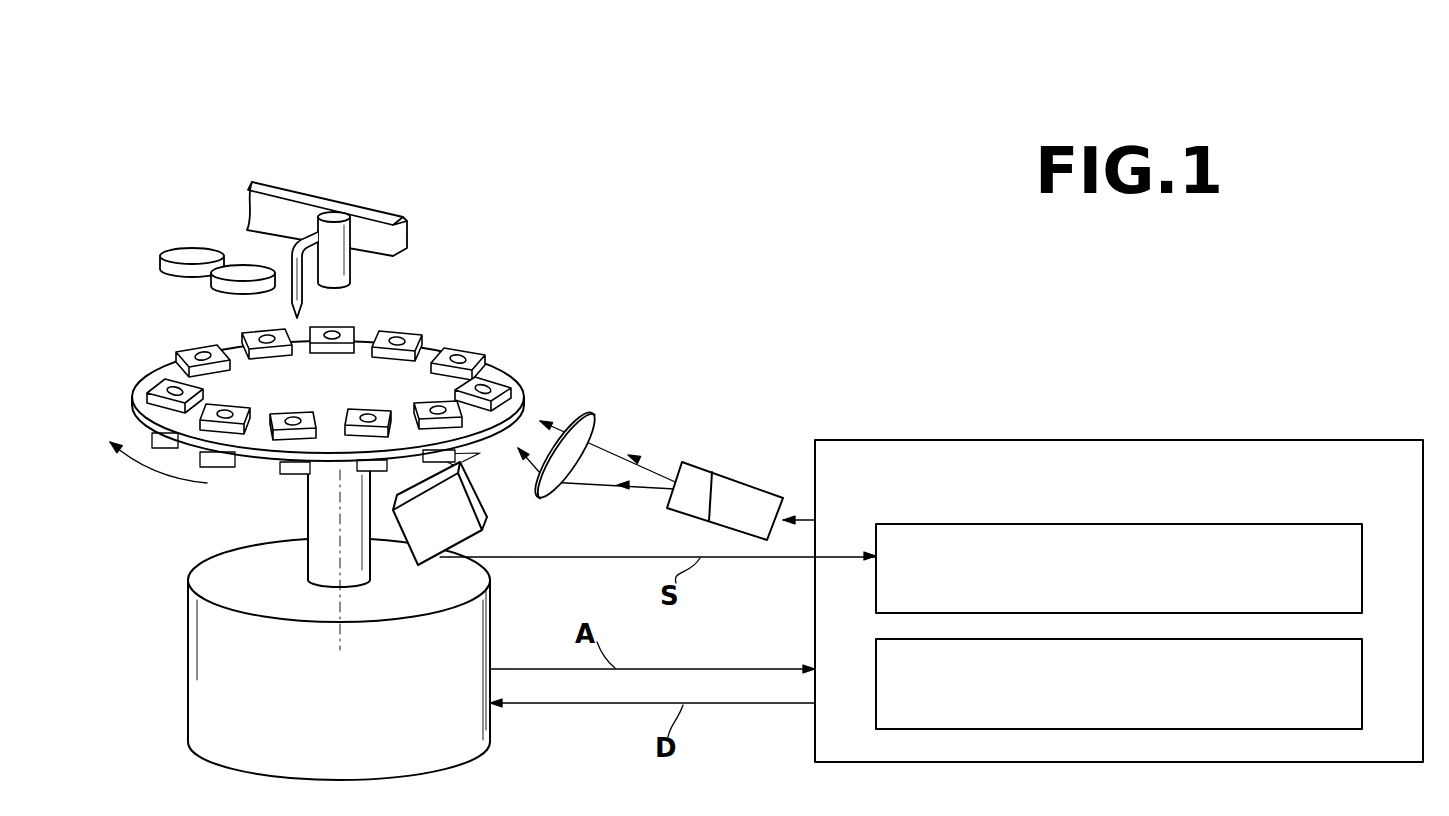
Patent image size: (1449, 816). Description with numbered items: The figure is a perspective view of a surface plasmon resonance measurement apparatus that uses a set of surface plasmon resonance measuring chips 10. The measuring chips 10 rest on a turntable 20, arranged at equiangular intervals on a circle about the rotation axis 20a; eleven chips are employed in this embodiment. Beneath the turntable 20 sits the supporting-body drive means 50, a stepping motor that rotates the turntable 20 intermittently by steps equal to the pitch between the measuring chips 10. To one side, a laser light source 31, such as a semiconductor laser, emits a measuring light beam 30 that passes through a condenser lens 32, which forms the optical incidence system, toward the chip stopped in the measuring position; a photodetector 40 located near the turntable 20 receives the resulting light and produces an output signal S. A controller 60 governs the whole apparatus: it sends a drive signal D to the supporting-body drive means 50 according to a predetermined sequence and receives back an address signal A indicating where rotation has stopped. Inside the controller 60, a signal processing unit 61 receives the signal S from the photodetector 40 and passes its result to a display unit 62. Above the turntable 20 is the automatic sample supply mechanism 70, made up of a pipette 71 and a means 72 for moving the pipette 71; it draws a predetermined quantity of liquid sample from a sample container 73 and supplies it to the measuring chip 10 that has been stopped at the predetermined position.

The measuring chips 10 is at (463, 338).
The turntable 20 is at (517, 390).
The rotation axis 20a is at (333, 483).
The measuring light beam 30 is at (666, 446).
The laser light source 31 is at (723, 472).
The condenser lens 32 is at (578, 415).
The photodetector 40 is at (466, 531).
The supporting-body drive means 50 is at (462, 735).
The controller 60 is at (1119, 575).
The signal processing unit 61 is at (876, 583).
The display unit 62 is at (876, 699).
The automatic sample supply mechanism 70 is at (343, 223).
The pipette 71 is at (285, 253).
The means for moving the pipette 72 is at (370, 208).
The sample container 73 is at (243, 270).